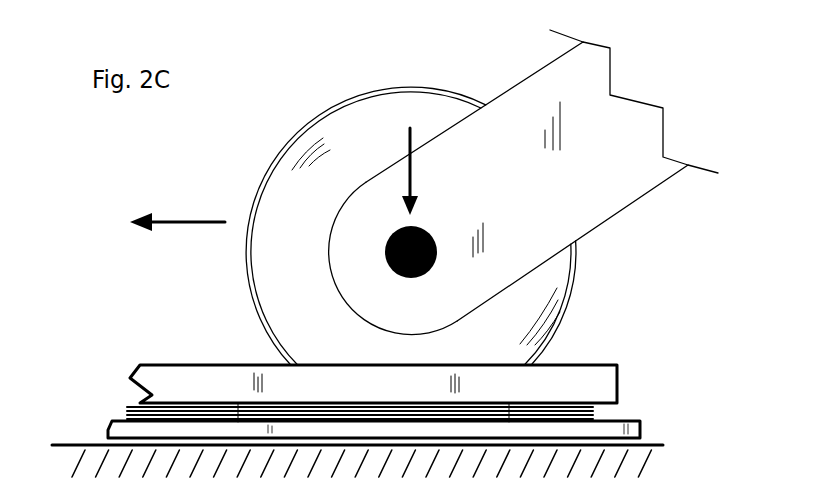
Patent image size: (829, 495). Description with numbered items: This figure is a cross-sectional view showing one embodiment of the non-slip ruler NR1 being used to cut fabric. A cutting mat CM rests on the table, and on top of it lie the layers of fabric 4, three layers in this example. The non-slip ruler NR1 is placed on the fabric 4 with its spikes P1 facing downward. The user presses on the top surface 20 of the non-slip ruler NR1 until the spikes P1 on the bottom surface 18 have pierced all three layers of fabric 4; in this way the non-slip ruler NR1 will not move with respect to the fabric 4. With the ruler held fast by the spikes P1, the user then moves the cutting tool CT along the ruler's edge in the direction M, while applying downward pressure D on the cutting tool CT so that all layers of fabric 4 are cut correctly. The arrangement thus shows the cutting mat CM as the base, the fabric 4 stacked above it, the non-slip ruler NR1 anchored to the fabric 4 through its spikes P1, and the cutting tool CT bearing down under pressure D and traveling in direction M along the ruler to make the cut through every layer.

The fabric 4 is at (333, 348).
The bottom surface 18 is at (185, 402).
The top surface 20 is at (206, 364).
The spikes P1 is at (238, 398).
The cutting mat CM is at (113, 431).
The cutting tool CT is at (498, 74).
The non-slip ruler NR1 is at (633, 293).
The downward pressure D is at (410, 162).
The movement of cutting tool M is at (202, 220).